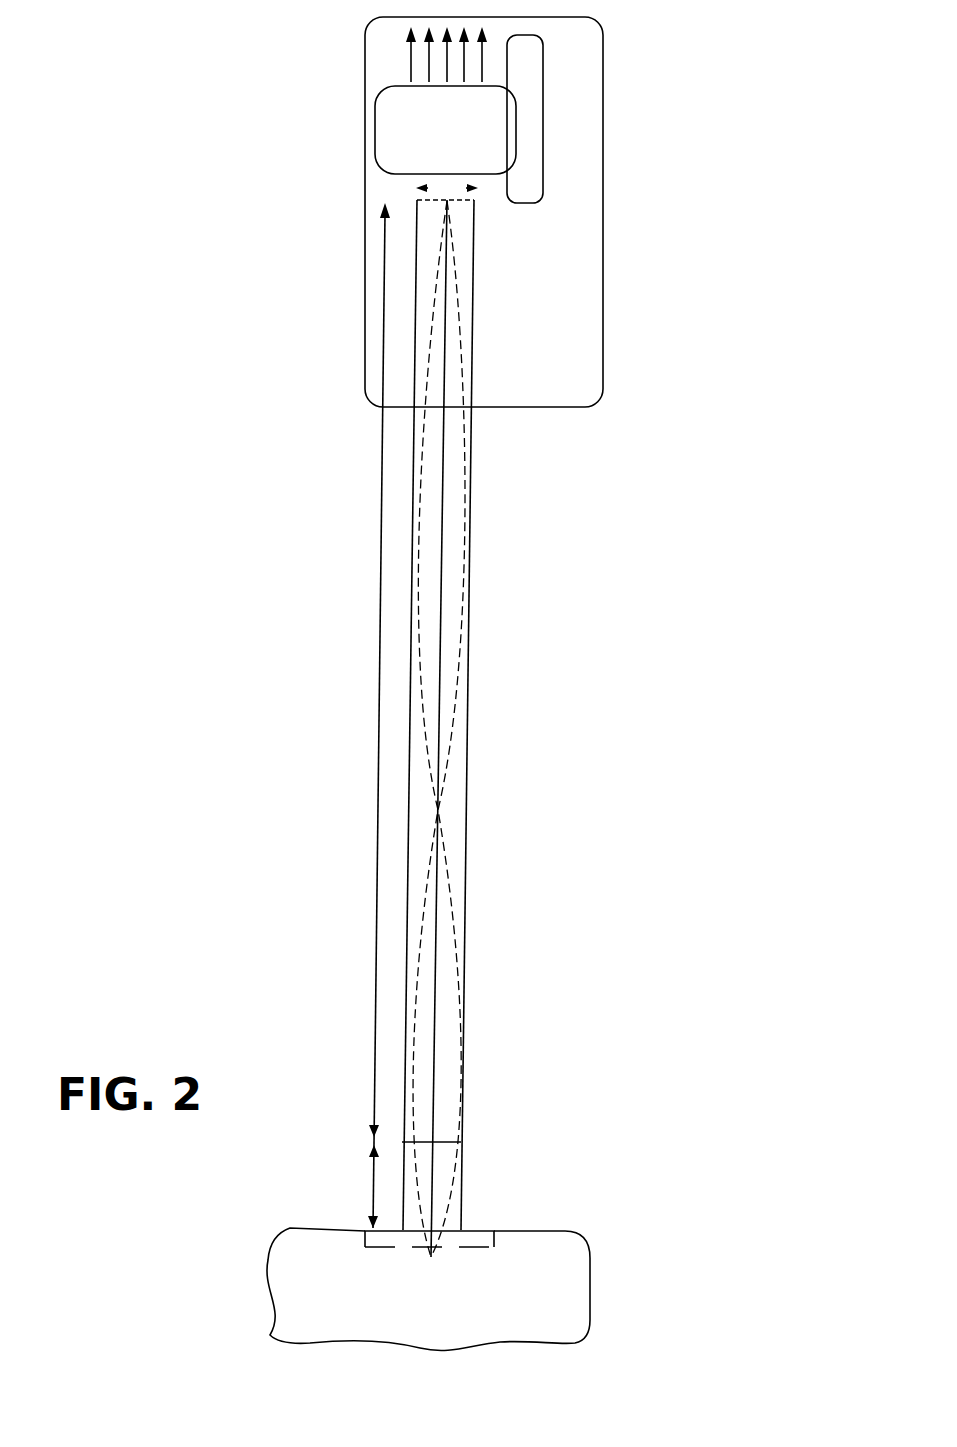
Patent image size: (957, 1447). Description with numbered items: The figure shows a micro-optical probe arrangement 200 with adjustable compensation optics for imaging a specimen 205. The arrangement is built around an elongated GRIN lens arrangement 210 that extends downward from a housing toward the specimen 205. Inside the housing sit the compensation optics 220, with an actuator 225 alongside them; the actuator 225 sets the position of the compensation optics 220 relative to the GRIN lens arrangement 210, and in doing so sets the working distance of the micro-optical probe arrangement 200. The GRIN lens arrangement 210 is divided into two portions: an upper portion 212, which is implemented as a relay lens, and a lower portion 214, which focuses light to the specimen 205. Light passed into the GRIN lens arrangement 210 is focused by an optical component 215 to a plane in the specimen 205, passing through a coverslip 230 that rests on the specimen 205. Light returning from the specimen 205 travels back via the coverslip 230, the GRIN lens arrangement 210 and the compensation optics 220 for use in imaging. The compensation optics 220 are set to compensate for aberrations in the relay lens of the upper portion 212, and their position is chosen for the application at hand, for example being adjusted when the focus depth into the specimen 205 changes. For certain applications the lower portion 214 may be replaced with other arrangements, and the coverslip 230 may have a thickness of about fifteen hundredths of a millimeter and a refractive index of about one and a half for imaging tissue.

The micro-optical probe arrangement 200 is at (714, 38).
The specimen 205 is at (573, 1226).
The GRIN lens arrangement 210 is at (469, 603).
The upper portion 212 is at (341, 230).
The lower portion 214 is at (327, 1130).
The optical component 215 is at (461, 1139).
The compensation optics 220 is at (376, 135).
The actuator 225 is at (543, 103).
The coverslip 230 is at (483, 1231).